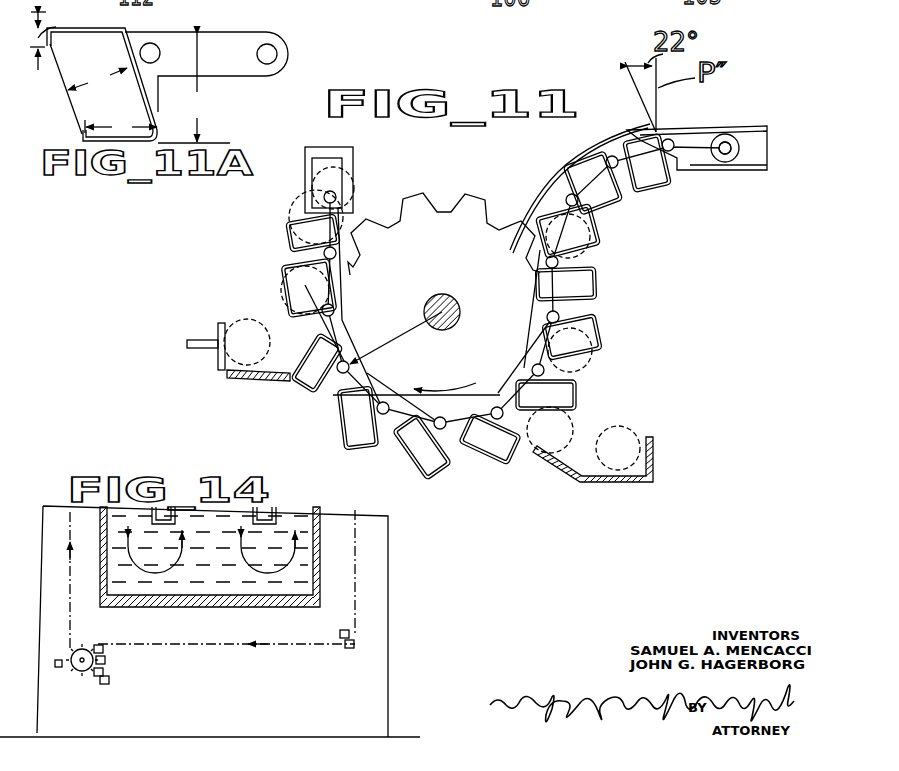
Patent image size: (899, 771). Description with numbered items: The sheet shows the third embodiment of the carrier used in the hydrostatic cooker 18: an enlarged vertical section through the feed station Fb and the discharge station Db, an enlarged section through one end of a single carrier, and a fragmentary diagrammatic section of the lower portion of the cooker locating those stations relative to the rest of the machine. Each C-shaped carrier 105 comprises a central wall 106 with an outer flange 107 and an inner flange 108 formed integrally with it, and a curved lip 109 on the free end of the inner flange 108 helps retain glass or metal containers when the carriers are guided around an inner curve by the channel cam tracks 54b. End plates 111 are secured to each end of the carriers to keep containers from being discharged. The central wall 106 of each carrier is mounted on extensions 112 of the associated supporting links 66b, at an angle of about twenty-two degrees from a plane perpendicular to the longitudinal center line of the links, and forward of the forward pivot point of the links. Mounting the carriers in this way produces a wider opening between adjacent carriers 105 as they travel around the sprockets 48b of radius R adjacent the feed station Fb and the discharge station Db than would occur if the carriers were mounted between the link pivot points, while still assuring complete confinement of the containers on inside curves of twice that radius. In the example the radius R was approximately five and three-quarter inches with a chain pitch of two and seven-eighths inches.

In FIG. 14, the hydrostatic cooker 18 is at (368, 571).
In FIG. 11, the sprocket 48b is at (496, 258).
In FIG. 11, the channel cam track 54b is at (354, 162).
In FIG. 11, the supporting link 66b is at (333, 180).
In FIG. 11A, the C-shaped carrier 105 is at (128, 40).
In FIG. 11, the C-shaped carrier 105 is at (298, 388).
In FIG. 14, the C-shaped carrier 105 is at (108, 652).
In FIG. 11, the central wall 106 is at (343, 311).
In FIG. 11, the outer flange 107 is at (284, 301).
In FIG. 11, the inner flange 108 is at (350, 263).
In FIG. 11, the curved lip 109 is at (310, 265).
In FIG. 11, the end plate 111 is at (308, 284).
In FIG. 11, the extension 112 is at (300, 243).
In FIG. 11, the sprocket radius R is at (420, 322).
In FIG. 11, the feed station Fb is at (215, 372).
In FIG. 14, the feed station Fb is at (58, 672).
In FIG. 11, the discharge station Db is at (658, 463).
In FIG. 14, the discharge station Db is at (112, 684).